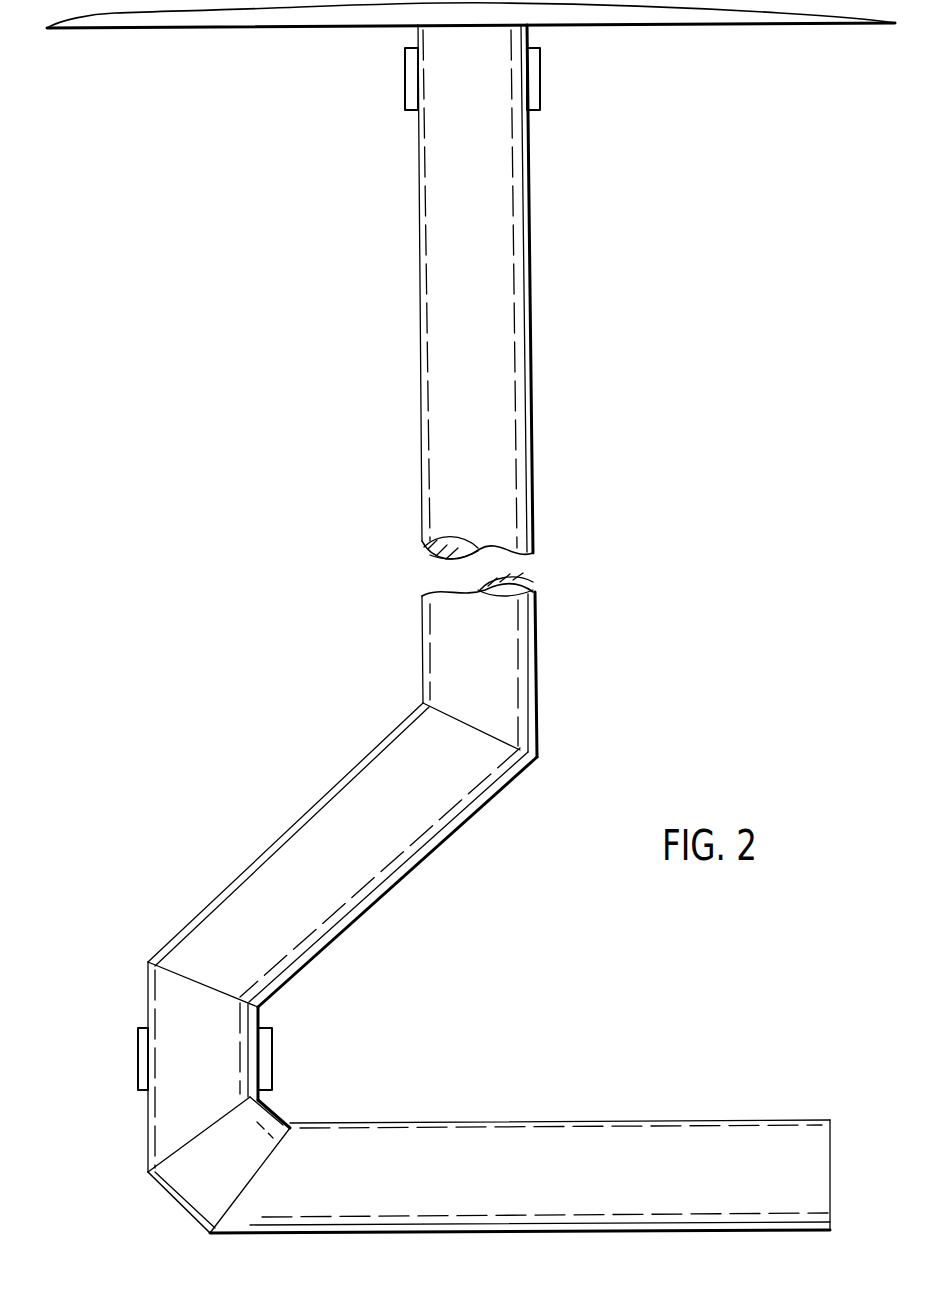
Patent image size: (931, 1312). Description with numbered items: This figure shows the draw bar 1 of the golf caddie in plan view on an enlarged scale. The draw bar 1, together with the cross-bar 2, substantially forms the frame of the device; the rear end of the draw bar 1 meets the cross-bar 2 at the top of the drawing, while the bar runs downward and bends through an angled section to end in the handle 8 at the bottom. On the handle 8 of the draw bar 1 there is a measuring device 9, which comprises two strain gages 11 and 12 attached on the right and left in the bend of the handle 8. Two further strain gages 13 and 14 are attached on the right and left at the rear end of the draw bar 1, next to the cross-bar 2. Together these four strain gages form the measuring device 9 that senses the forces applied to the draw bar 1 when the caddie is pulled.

The draw bar 1 is at (503, 416).
The cross-bar 2 is at (797, 15).
The handle 8 is at (618, 1163).
The measuring device 9 is at (310, 1085).
The strain gage 11 is at (138, 1043).
The strain gage 12 is at (272, 1045).
The strain gage 13 is at (406, 92).
The strain gage 14 is at (540, 77).